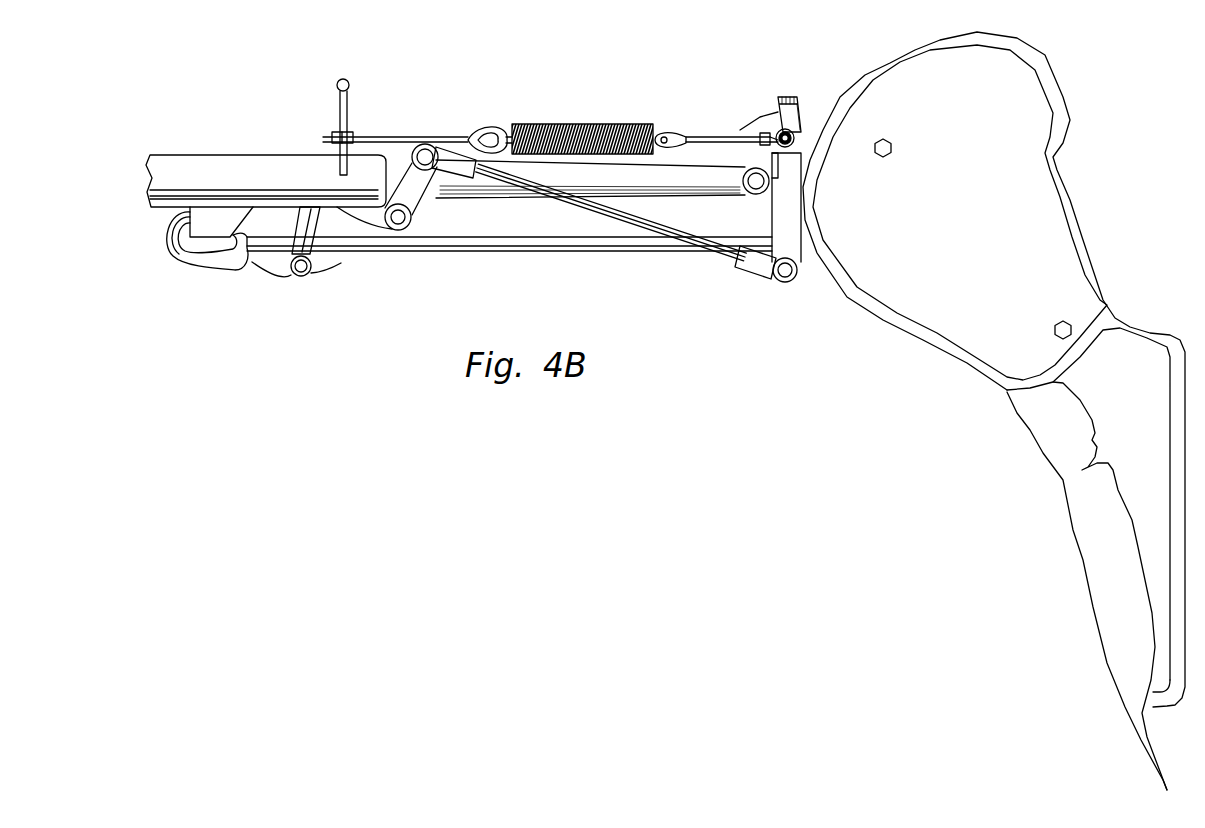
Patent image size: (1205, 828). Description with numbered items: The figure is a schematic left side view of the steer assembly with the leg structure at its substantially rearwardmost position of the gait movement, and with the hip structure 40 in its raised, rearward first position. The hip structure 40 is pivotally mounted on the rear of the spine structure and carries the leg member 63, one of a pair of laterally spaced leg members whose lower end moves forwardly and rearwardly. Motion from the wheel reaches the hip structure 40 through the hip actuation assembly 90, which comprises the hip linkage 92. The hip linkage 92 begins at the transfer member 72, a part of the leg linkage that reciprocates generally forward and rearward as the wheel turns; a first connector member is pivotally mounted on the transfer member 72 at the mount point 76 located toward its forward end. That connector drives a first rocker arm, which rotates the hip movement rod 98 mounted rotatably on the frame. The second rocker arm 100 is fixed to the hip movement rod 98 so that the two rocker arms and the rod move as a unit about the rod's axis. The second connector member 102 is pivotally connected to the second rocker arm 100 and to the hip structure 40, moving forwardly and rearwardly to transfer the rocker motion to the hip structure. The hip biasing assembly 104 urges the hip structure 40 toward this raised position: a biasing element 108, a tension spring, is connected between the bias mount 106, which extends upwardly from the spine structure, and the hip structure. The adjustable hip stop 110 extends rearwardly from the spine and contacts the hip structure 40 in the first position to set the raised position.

The hip structure 40 is at (788, 181).
The leg member 63 is at (1013, 353).
The transfer member 72 is at (528, 240).
The mount point 76 is at (273, 268).
The hip actuation assembly 90 is at (397, 257).
The hip linkage 92 is at (628, 254).
The hip movement rod 98 is at (402, 217).
The second rocker arm 100 is at (410, 187).
The second connector member 102 is at (714, 250).
The hip biasing assembly 104 is at (590, 120).
The bias mount 106 is at (341, 118).
The biasing element 108 is at (560, 124).
The hip stop 110 is at (786, 96).